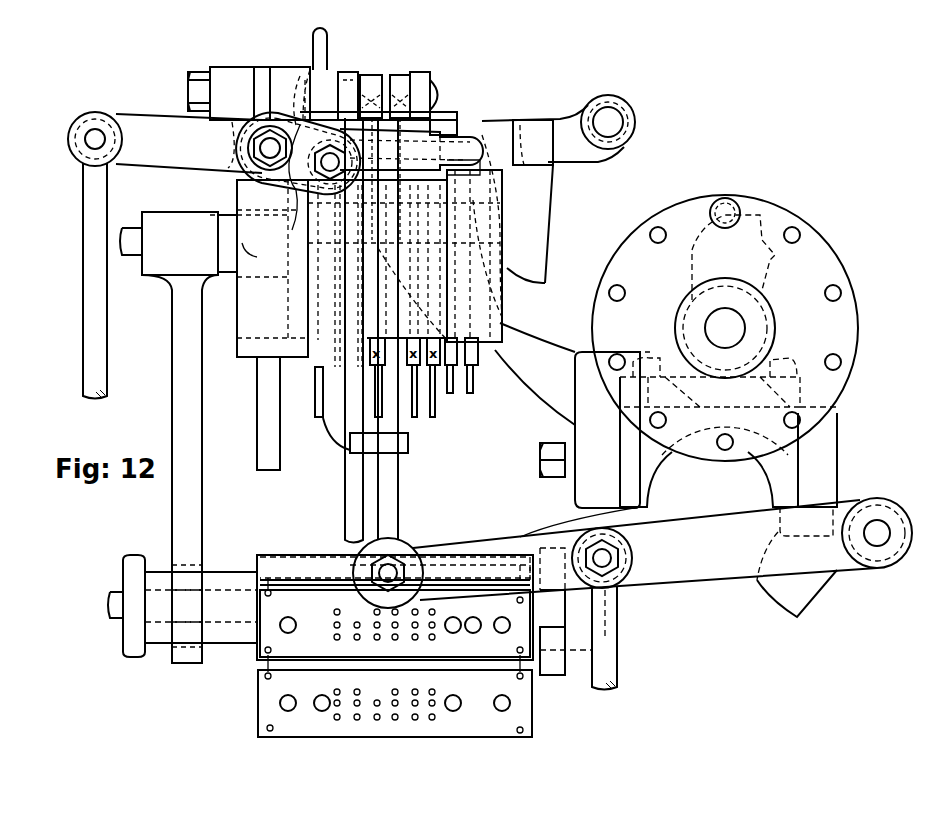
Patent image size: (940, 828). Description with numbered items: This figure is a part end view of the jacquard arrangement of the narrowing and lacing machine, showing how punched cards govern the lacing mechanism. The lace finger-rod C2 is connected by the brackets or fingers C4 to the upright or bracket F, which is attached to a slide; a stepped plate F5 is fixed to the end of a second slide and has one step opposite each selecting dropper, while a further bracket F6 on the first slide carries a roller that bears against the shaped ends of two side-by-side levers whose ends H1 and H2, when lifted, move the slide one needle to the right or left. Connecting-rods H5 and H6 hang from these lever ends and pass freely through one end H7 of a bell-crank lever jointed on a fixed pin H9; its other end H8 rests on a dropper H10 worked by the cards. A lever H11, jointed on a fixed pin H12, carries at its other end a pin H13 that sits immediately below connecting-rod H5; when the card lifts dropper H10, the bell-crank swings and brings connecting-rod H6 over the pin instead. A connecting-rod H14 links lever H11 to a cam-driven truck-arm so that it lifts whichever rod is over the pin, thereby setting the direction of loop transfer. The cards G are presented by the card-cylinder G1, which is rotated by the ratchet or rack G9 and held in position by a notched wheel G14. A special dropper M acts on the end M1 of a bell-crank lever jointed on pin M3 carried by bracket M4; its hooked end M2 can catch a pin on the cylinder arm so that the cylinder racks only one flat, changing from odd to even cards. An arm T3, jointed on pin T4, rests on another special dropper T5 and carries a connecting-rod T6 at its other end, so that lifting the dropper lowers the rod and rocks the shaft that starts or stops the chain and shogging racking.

The arm T3 is at (165, 142).
The pin or axle T4 is at (298, 154).
The special dropper T5 is at (452, 172).
The connecting-rod T6 is at (95, 281).
The special dropper M is at (318, 367).
The end of bell-crank lever M1 is at (318, 38).
The hooked end of bell-crank lever M2 is at (269, 413).
The pin or axle M3 is at (268, 52).
The bracket M4 is at (220, 170).
The lever end H1 is at (430, 74).
The lever end H2 is at (360, 56).
The connecting-rod H5 is at (398, 485).
The connecting-rod H6 is at (345, 492).
The end of bell-crank lever H7 is at (365, 435).
The end of bell-crank lever H8 is at (470, 140).
The fixed pin or axle H9 is at (330, 162).
The dropper H10 is at (481, 176).
The lever H11 is at (676, 557).
The fixed pin or axle H12 is at (890, 526).
The pin or axle H13 is at (368, 573).
The connecting-rod H14 is at (592, 683).
The upright or bracket F is at (474, 248).
The stepped plate F5 is at (405, 75).
The bracket F6 is at (371, 75).
The lace finger-rod C2 is at (558, 128).
The brackets or fingers C4 is at (530, 201).
The cards G is at (395, 646).
The card-cylinder G1 is at (255, 650).
The ratchet or rack G9 is at (178, 437).
The notched wheel G14 is at (554, 677).